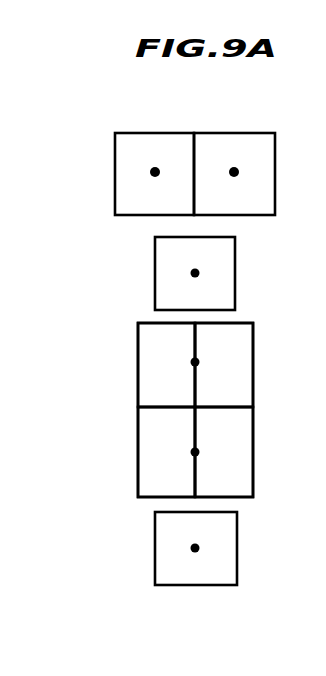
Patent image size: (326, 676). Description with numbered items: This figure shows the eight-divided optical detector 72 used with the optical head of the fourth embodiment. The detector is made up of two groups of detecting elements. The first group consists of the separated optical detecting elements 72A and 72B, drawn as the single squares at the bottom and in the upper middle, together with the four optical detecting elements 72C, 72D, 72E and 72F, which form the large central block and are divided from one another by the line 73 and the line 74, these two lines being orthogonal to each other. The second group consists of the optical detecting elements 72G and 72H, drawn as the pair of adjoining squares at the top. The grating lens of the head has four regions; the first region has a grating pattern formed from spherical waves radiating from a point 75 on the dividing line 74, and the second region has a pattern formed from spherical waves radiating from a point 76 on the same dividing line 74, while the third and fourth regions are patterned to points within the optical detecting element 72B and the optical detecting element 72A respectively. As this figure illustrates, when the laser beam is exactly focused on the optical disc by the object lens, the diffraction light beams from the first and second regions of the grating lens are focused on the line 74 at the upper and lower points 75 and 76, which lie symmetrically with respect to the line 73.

The eight-divided optical detector 72 is at (120, 353).
The optical detecting element 72A is at (177, 572).
The optical detecting element 72B is at (173, 258).
The optical detecting element 72C is at (237, 360).
The optical detecting element 72D is at (243, 470).
The optical detecting element 72E is at (155, 370).
The optical detecting element 72F is at (155, 488).
The optical detecting element 72G is at (137, 152).
The optical detecting element 72H is at (253, 148).
The dividing line 73 is at (158, 410).
The dividing line 74 is at (197, 398).
The point 75 is at (197, 360).
The point 76 is at (200, 452).